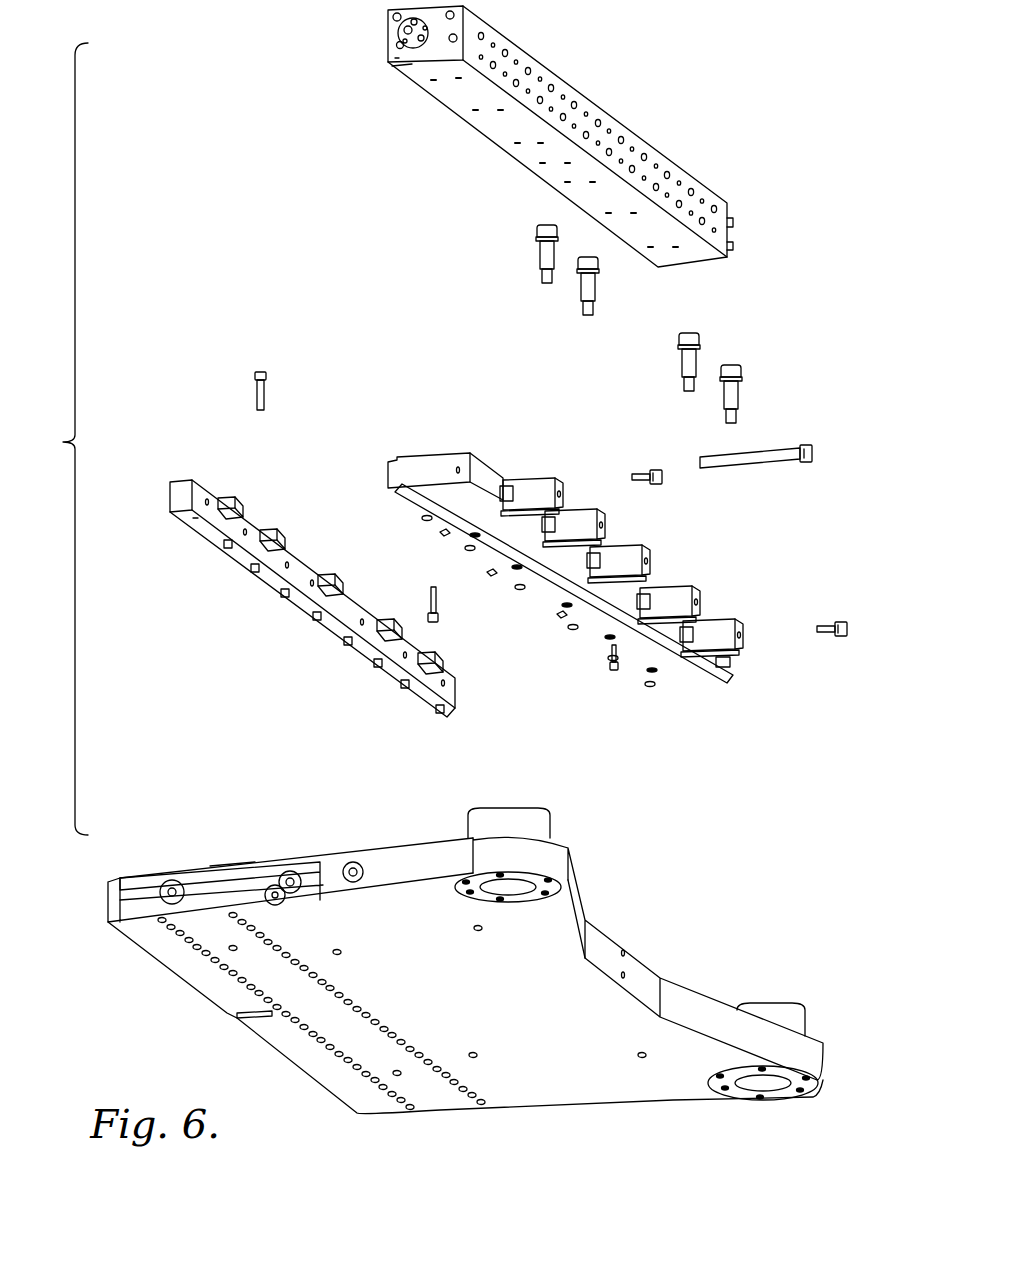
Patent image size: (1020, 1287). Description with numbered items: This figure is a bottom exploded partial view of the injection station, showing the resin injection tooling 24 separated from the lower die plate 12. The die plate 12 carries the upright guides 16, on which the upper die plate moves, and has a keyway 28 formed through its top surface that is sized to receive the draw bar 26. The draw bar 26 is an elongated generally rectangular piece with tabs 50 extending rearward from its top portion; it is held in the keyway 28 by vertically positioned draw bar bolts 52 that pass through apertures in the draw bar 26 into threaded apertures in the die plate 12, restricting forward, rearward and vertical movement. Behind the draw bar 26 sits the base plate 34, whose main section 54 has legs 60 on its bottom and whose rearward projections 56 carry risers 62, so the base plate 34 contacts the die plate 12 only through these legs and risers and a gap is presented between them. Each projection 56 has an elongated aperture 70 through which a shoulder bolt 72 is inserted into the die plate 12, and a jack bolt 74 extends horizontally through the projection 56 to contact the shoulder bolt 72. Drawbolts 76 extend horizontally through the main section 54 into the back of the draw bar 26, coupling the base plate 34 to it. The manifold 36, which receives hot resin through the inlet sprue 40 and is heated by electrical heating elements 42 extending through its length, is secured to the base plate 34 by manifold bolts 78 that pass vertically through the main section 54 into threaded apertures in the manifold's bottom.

The lower die plate 12 is at (408, 863).
The upright guides 16 is at (538, 822).
The resin injection tooling 24 is at (61, 439).
The draw bar 26 is at (175, 500).
The keyway 28 is at (253, 872).
The base plate 34 is at (413, 463).
The manifold 36 is at (420, 72).
The inlet sprue 40 is at (597, 126).
The heating elements 42 is at (407, 44).
The tabs 50 is at (233, 503).
The draw bar bolts 52 is at (254, 385).
The main section 54 is at (688, 675).
The projections 56 is at (602, 511).
The legs 60 is at (466, 485).
The risers 62 is at (470, 535).
The elongated aperture 70 is at (530, 513).
The shoulder bolt 72 is at (580, 297).
The jack bolt 74 is at (650, 470).
The drawbolts 76 is at (800, 450).
The manifold bolts 78 is at (432, 586).